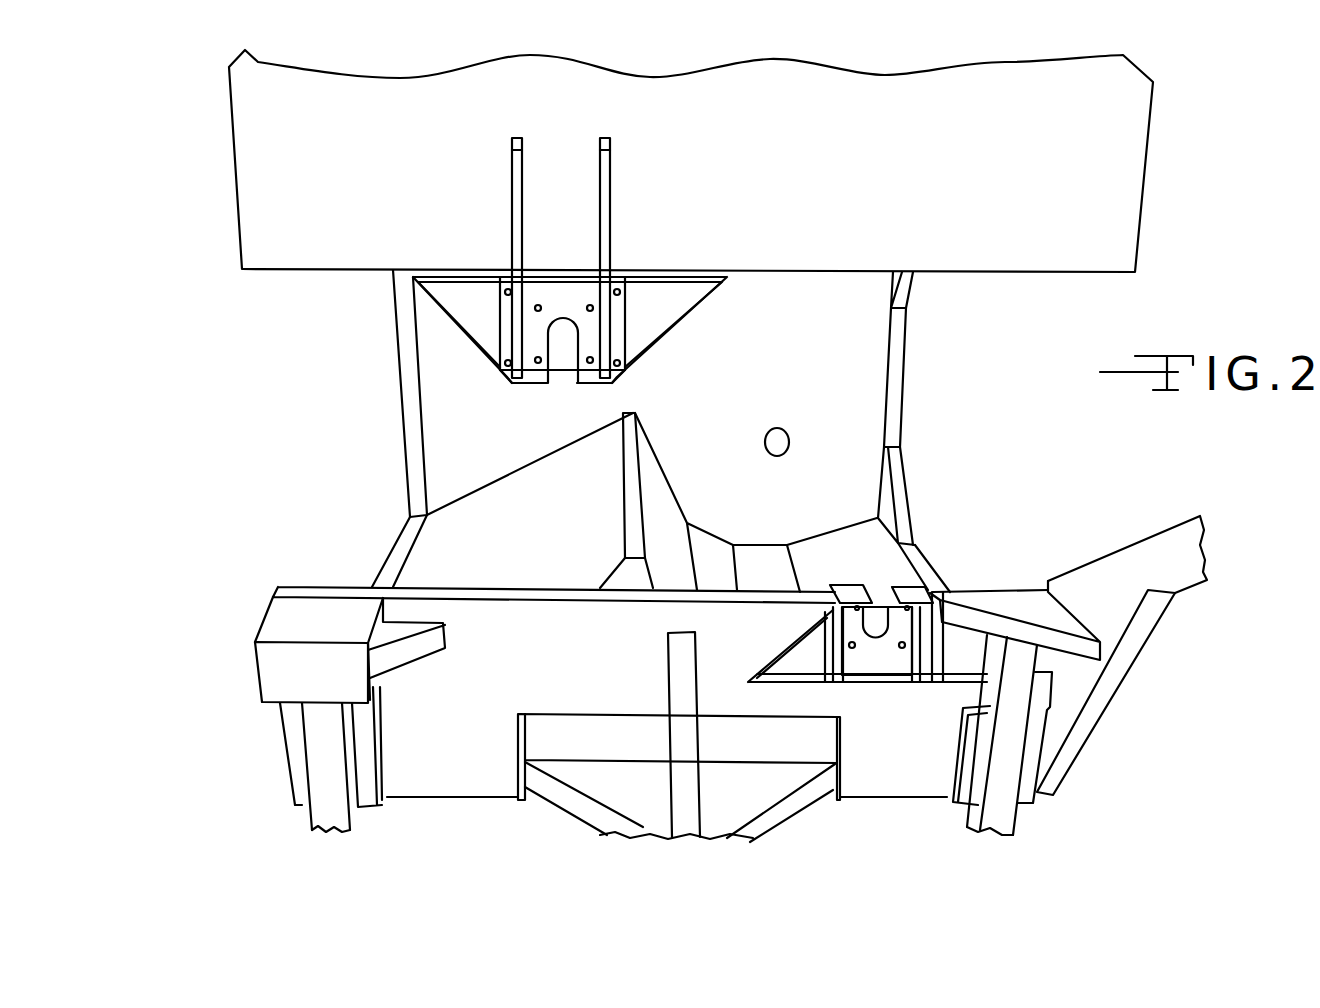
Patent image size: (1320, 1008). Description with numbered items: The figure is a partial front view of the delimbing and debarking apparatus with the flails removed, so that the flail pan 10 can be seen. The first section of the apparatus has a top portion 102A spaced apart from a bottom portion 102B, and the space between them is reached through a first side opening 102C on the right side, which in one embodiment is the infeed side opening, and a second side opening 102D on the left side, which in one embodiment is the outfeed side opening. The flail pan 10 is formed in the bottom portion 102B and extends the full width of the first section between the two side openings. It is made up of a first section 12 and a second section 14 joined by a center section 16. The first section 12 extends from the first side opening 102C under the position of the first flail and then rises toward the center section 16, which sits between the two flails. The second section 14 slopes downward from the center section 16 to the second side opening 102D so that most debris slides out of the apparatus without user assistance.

The top portion 102A is at (775, 266).
The bottom portion 102B is at (422, 800).
The first side opening 102C is at (950, 418).
The second side opening 102D is at (336, 442).
The flail pan 10 is at (665, 503).
The first section 12 is at (892, 567).
The second section 14 is at (472, 555).
The center section 16 is at (627, 418).